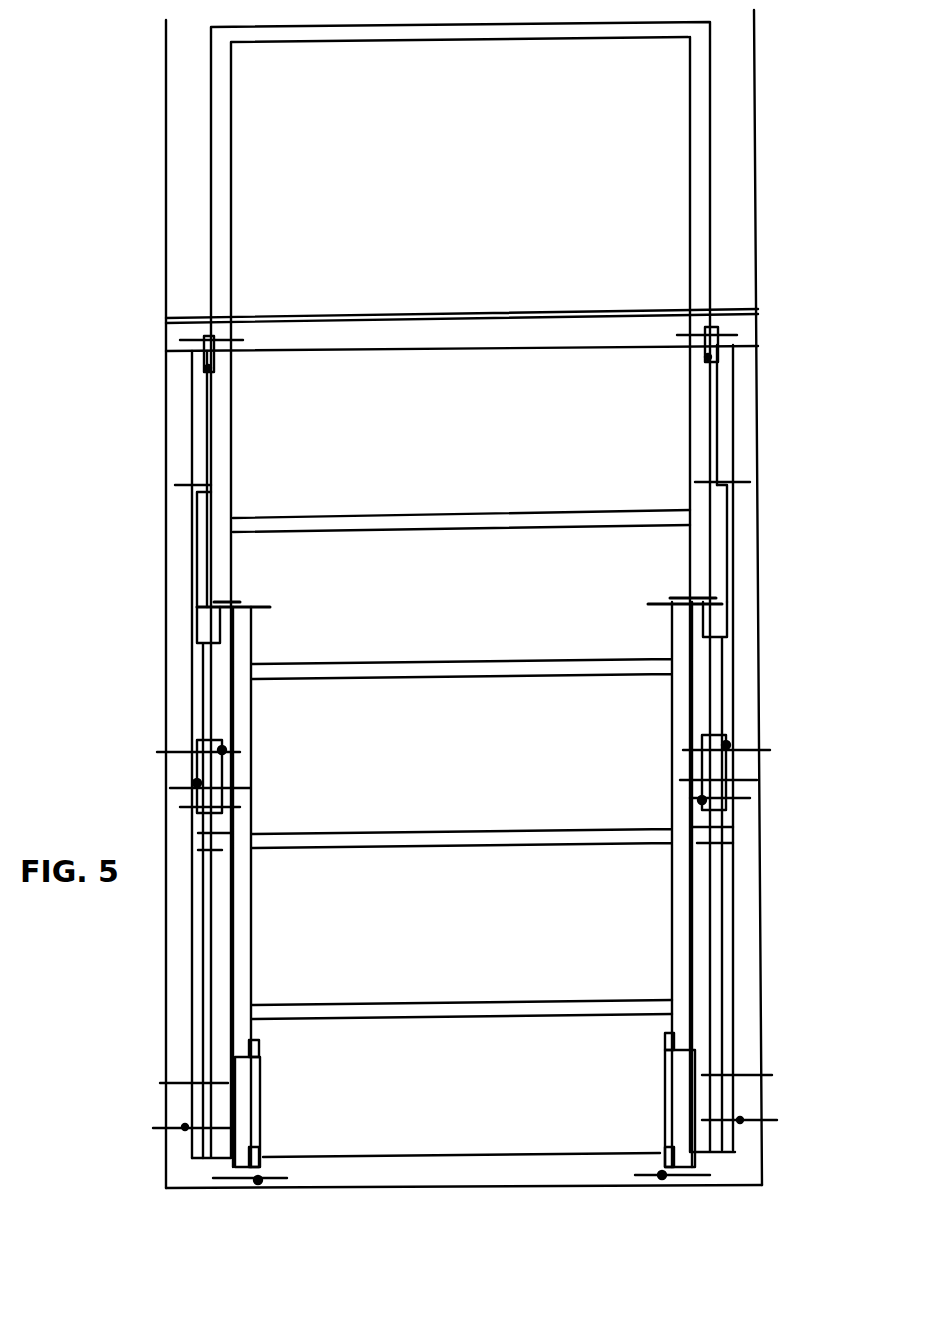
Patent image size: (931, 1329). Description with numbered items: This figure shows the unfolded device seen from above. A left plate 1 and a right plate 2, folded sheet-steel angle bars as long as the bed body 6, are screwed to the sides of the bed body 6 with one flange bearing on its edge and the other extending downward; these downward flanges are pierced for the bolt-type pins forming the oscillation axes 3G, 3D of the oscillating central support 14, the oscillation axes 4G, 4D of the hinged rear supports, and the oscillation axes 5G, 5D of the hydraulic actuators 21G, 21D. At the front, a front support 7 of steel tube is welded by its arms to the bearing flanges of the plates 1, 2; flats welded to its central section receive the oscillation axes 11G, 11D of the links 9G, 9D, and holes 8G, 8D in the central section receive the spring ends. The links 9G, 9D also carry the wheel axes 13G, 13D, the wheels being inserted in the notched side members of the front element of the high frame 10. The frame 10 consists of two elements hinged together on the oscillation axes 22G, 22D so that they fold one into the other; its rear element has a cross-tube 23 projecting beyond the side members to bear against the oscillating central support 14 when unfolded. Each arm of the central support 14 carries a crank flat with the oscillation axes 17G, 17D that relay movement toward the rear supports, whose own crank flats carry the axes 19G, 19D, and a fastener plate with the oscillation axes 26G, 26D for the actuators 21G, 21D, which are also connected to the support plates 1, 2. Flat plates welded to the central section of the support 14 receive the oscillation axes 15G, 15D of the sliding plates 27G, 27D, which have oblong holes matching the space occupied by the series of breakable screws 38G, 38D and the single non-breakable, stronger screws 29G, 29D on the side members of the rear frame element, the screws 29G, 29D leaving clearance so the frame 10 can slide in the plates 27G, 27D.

The left plate 1 is at (180, 546).
The right plate 2 is at (742, 537).
The frame 10 is at (703, 150).
The front support 7 is at (446, 338).
The hole 8G is at (211, 318).
The hole 8D is at (712, 310).
The oscillation axis 11G is at (204, 342).
The oscillation axis 11D is at (714, 330).
The link 9G is at (203, 355).
The link 9D is at (713, 343).
The wheel axis 13G is at (212, 370).
The wheel axis 13D is at (706, 357).
The oscillation axis 5G is at (192, 485).
The oscillation axis 5D is at (726, 478).
The hydraulic actuator 21G is at (207, 625).
The hydraulic actuator 21D is at (718, 618).
The oscillation axis 22G is at (246, 606).
The oscillation axis 22D is at (670, 600).
The cross-tube 23 is at (440, 838).
The bed body 6 is at (464, 945).
The oscillation axis 17G is at (200, 752).
The oscillation axis 17D is at (735, 750).
The oscillation axis 3G is at (196, 771).
The oscillation axis 3D is at (740, 780).
The oscillation axis 26G is at (216, 814).
The oscillation axis 26D is at (700, 800).
The oscillation axis 19G is at (192, 1083).
The oscillation axis 19D is at (735, 1075).
The oscillation axis 4G is at (180, 1128).
The oscillation axis 4D is at (745, 1120).
The plate 27G is at (257, 1116).
The plate 27D is at (668, 1097).
The screw 38G is at (250, 1058).
The screw 38D is at (666, 1042).
The screw 29G is at (252, 1156).
The screw 29D is at (668, 1150).
The oscillation axis 15G is at (258, 1186).
The oscillation axis 15D is at (661, 1182).
The oscillating central support 14 is at (460, 1172).